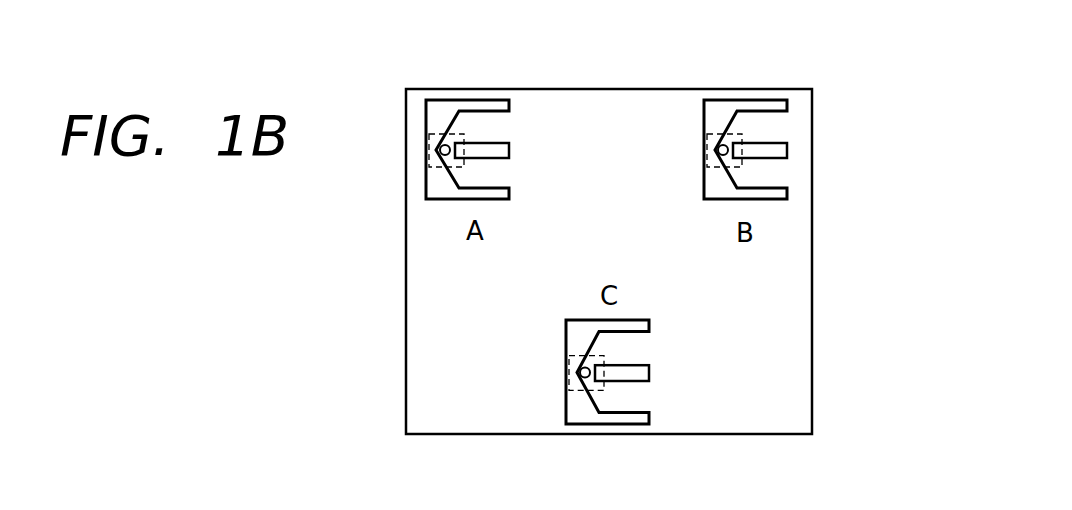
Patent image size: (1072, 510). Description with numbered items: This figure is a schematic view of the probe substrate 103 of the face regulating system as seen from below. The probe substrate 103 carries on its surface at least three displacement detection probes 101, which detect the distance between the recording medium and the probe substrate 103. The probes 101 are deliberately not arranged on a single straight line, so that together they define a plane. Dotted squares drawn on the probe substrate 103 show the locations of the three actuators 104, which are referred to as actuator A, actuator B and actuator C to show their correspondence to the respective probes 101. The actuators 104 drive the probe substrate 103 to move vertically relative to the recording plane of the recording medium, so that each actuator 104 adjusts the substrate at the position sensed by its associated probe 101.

The displacement detection probe 101 is at (773, 129).
The probe substrate 103 is at (406, 249).
The actuator 104 is at (740, 167).